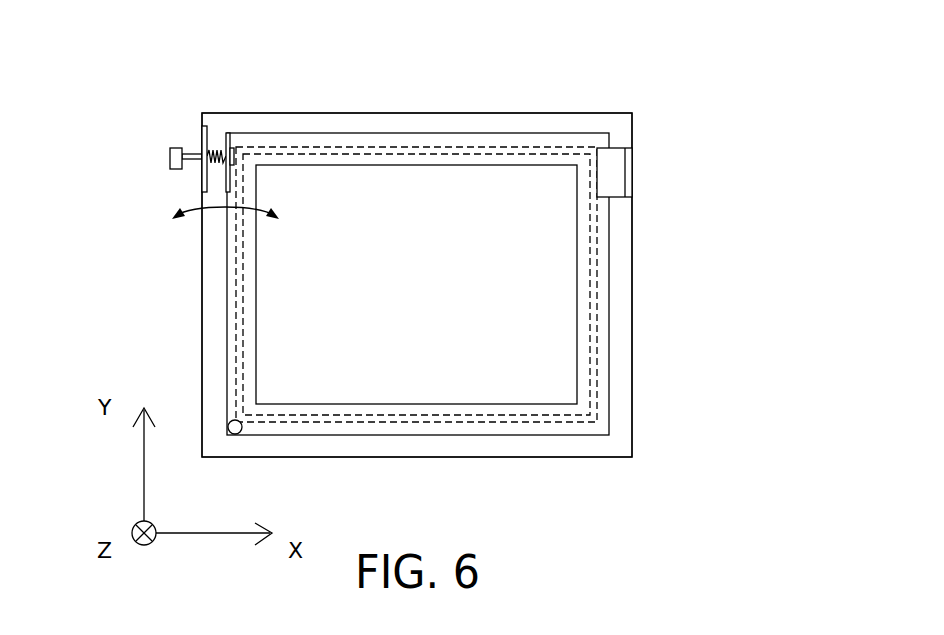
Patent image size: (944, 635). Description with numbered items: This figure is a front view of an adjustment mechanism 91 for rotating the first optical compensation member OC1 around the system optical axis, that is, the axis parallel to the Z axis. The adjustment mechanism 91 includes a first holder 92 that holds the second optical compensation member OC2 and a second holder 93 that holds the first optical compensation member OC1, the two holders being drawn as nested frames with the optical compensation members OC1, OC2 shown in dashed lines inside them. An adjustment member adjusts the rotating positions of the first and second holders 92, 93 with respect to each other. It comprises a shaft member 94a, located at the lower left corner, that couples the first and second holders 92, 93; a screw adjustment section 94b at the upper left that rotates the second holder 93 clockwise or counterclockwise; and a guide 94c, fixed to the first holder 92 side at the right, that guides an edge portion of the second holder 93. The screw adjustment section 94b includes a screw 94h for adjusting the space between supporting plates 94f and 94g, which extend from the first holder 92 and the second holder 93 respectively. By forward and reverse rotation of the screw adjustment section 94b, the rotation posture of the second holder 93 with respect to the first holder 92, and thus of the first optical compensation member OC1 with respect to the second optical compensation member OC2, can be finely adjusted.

The adjustment mechanism 91 is at (632, 111).
The first holder 92 is at (390, 112).
The second holder 93 is at (297, 133).
The first optical compensation member OC1 is at (528, 153).
The second optical compensation member OC2 is at (466, 147).
The shaft member 94a is at (242, 433).
The screw adjustment section 94b is at (186, 142).
The guide 94c is at (632, 168).
The supporting plate 94f is at (203, 128).
The supporting plate 94g is at (226, 134).
The screw 94h is at (170, 157).